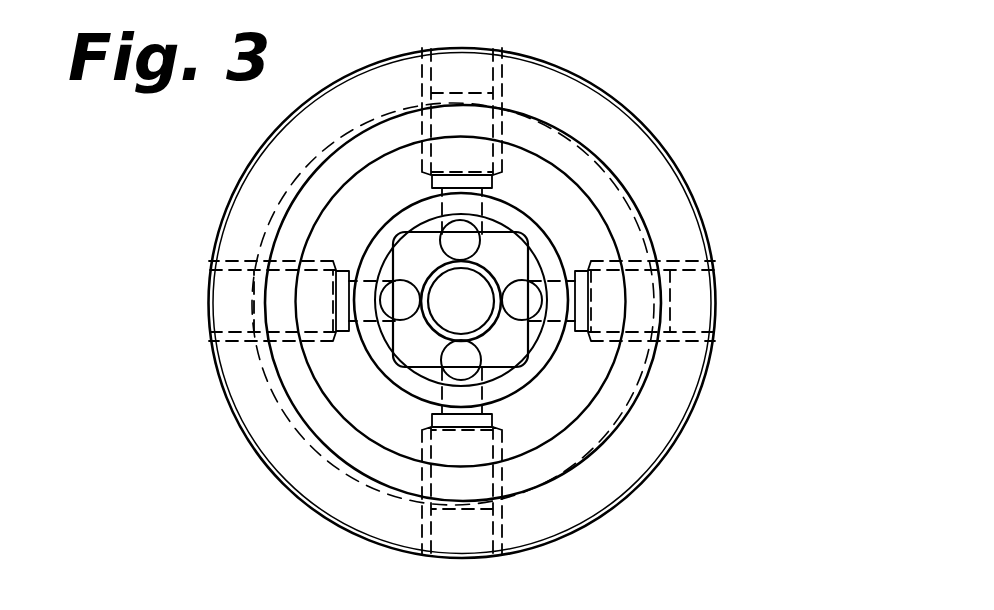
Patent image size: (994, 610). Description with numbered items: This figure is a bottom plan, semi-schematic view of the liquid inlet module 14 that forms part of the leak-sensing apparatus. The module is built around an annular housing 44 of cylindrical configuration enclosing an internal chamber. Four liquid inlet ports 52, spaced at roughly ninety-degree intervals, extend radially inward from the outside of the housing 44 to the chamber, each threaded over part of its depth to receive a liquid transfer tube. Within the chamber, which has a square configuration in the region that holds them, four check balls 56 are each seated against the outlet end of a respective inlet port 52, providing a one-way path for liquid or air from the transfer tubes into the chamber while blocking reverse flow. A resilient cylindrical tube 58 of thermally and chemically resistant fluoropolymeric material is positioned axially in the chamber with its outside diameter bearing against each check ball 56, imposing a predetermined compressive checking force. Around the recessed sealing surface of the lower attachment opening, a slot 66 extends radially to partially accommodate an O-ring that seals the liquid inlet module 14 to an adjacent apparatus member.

The liquid inlet module 14 is at (717, 181).
The annular housing 44 is at (568, 96).
The liquid inlet ports 52 is at (462, 47).
The check balls 56 is at (513, 323).
The cylindrical tube 58 is at (494, 283).
The slot 66 is at (550, 193).